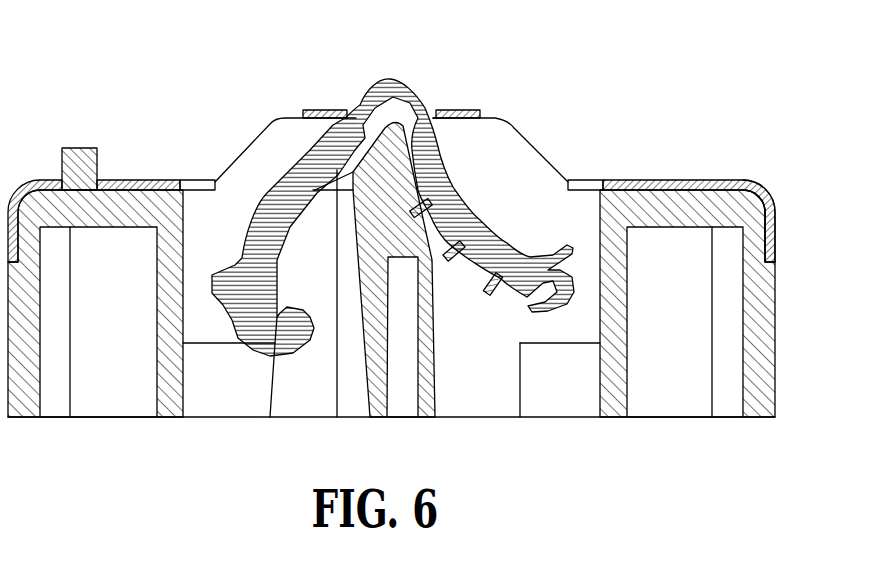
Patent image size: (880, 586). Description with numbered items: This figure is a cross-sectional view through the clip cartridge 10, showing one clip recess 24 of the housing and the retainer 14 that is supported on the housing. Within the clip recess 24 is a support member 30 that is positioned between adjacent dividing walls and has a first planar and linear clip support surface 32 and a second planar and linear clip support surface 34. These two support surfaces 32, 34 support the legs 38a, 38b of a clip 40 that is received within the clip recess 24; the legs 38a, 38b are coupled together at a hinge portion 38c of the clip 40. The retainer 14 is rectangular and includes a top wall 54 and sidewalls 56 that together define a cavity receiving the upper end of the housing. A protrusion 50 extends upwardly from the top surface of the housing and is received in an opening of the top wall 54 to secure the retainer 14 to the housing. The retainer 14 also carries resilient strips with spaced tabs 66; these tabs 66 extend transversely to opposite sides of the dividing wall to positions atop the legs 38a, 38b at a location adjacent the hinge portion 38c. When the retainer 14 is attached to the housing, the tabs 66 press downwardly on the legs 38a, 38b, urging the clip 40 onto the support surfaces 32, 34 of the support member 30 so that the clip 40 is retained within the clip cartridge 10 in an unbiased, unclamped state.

The clip cartridge 10 is at (577, 75).
The retainer 14 is at (693, 255).
The clip recess 24 is at (285, 395).
The support member 30 is at (438, 352).
The first clip support surface 32 is at (343, 123).
The second clip support surface 34 is at (393, 202).
The leg 38a is at (273, 203).
The leg 38b is at (470, 230).
The hinge portion 38c is at (405, 92).
The clip 40 is at (438, 102).
The protrusion 50 is at (82, 155).
The top wall 54 is at (707, 178).
The sidewall 56 is at (767, 237).
The tab 66 is at (341, 112).